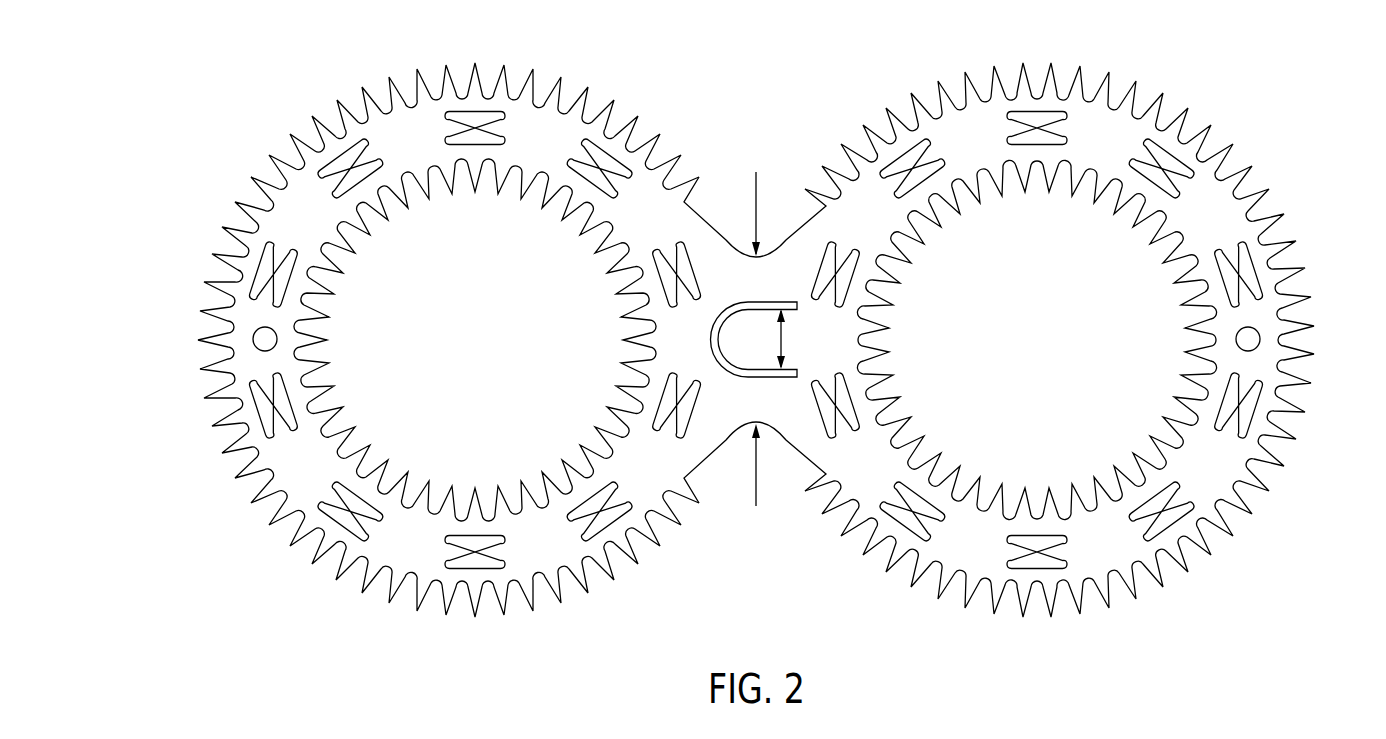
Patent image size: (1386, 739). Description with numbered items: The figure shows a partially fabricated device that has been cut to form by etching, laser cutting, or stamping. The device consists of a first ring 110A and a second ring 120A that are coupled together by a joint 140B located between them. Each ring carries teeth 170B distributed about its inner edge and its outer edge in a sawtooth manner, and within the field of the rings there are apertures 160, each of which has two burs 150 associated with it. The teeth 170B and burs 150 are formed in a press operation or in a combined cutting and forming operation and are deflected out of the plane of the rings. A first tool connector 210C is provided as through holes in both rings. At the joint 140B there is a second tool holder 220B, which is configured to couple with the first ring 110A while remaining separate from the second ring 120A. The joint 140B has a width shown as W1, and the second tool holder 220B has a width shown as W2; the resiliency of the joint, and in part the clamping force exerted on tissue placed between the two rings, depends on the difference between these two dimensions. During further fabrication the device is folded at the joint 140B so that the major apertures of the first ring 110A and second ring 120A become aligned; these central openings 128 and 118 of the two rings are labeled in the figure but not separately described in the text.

The first ring 110A is at (865, 205).
The second ring 120A is at (652, 477).
The joint 140B is at (753, 398).
The teeth 170B is at (1022, 72).
The first lumen 128 is at (507, 443).
The second lumen 118 is at (1082, 443).
The burs 150 is at (337, 168).
The aperture 160 is at (268, 407).
The first tool connector 210C is at (265, 339).
The second tool holder 220B is at (733, 333).
The joint width W1 is at (757, 214).
The second tool connector width W2 is at (785, 338).